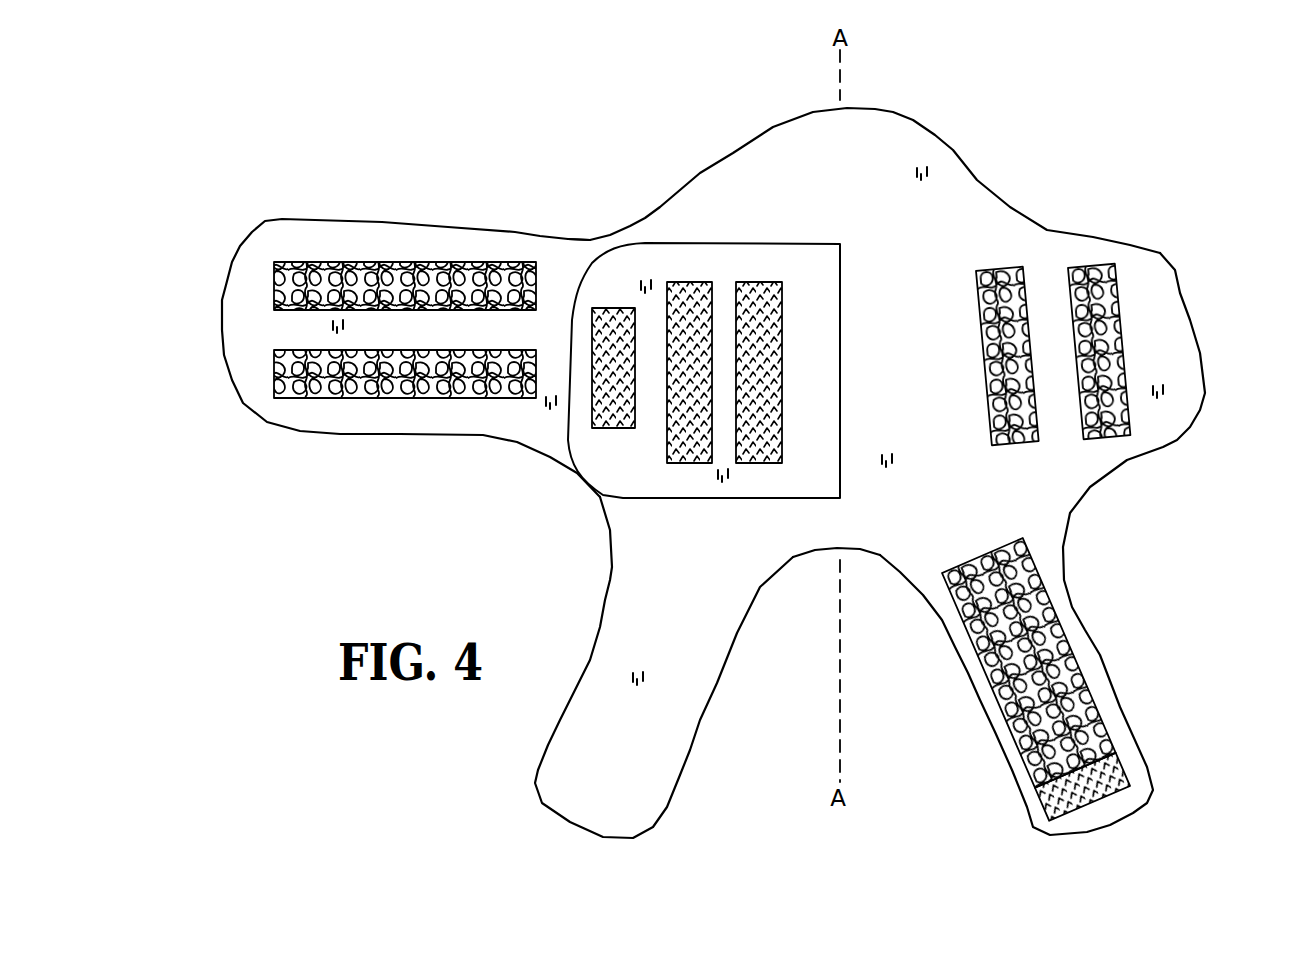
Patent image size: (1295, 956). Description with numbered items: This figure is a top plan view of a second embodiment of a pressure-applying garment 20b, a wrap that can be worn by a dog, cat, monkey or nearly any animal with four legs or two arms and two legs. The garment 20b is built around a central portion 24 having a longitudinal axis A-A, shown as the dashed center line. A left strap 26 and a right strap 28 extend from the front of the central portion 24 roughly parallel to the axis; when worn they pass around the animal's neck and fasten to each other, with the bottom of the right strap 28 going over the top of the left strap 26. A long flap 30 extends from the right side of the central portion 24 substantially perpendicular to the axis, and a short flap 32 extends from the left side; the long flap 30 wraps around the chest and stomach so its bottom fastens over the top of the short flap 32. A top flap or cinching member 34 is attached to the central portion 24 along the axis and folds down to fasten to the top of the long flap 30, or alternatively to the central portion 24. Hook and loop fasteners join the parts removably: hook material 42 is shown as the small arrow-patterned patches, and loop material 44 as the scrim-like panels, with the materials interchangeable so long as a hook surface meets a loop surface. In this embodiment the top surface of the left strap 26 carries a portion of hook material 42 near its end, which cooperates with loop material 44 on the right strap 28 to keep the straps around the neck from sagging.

The pressure-applying garment 20b is at (744, 473).
The central portion 24 is at (977, 187).
The left strap 26 is at (1120, 810).
The right strap 28 is at (558, 755).
The long flap 30 is at (432, 237).
The short flap 32 is at (1188, 355).
The cinching member 34 is at (770, 252).
The hook material 42 is at (690, 290).
The loop material 44 is at (325, 293).